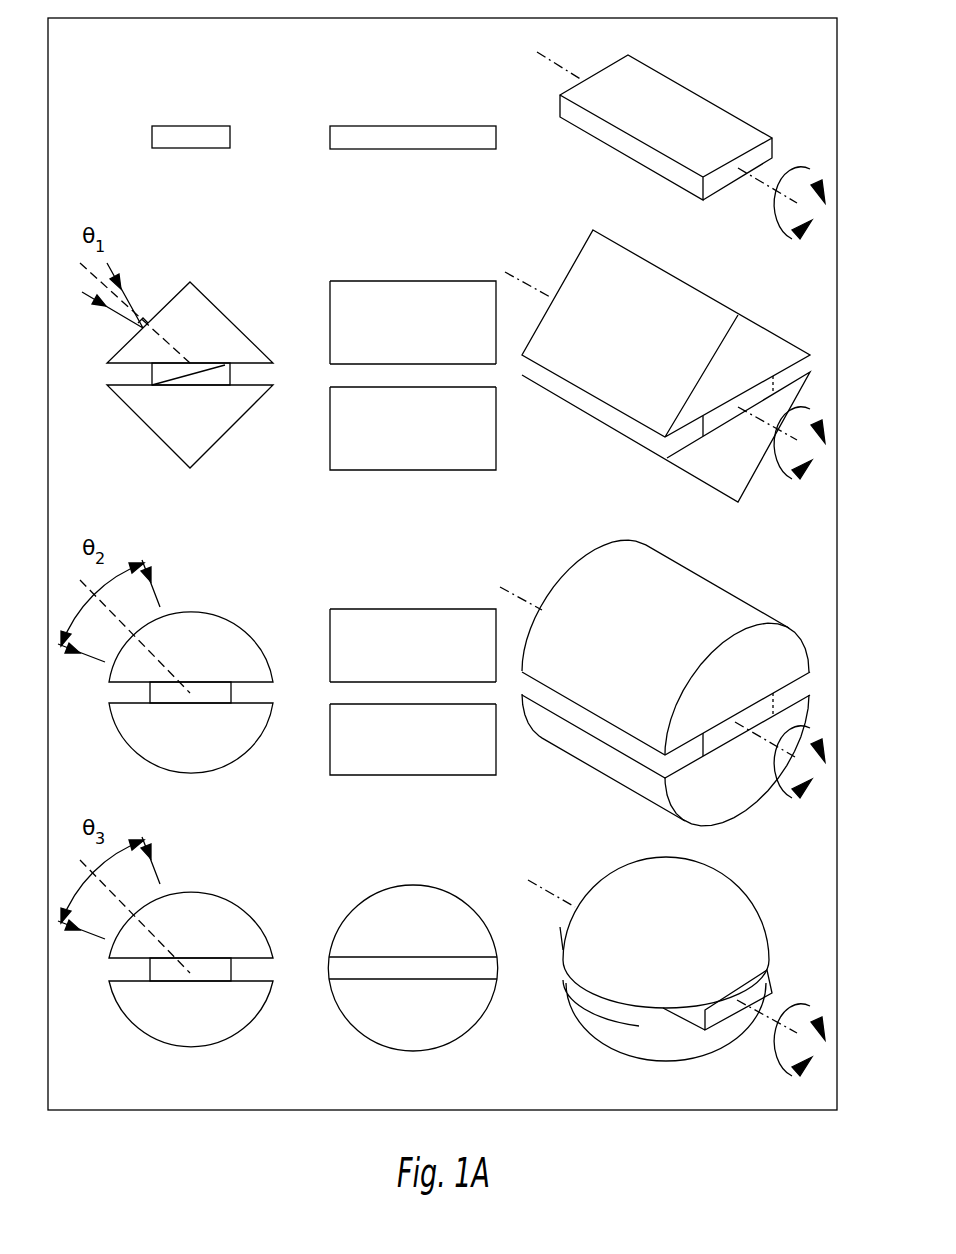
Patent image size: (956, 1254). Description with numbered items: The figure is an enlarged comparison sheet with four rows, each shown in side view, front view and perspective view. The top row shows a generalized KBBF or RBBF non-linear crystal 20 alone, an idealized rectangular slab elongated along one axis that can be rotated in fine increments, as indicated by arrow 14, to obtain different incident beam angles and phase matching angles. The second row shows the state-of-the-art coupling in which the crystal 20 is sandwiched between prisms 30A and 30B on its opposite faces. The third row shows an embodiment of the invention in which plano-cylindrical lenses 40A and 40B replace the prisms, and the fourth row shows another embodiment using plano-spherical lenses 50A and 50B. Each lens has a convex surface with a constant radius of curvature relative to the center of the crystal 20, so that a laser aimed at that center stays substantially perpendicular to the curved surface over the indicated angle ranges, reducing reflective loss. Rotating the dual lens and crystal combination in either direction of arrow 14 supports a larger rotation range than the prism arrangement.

The non-linear crystal 20 is at (173, 125).
The arrow 14 is at (782, 239).
The prism 30A is at (201, 343).
The prism 30B is at (202, 426).
The plano-cylindrical lens 40A is at (202, 668).
The plano-cylindrical lens 40B is at (202, 742).
The plano-spherical lens 50A is at (202, 944).
The plano-spherical lens 50B is at (202, 1018).